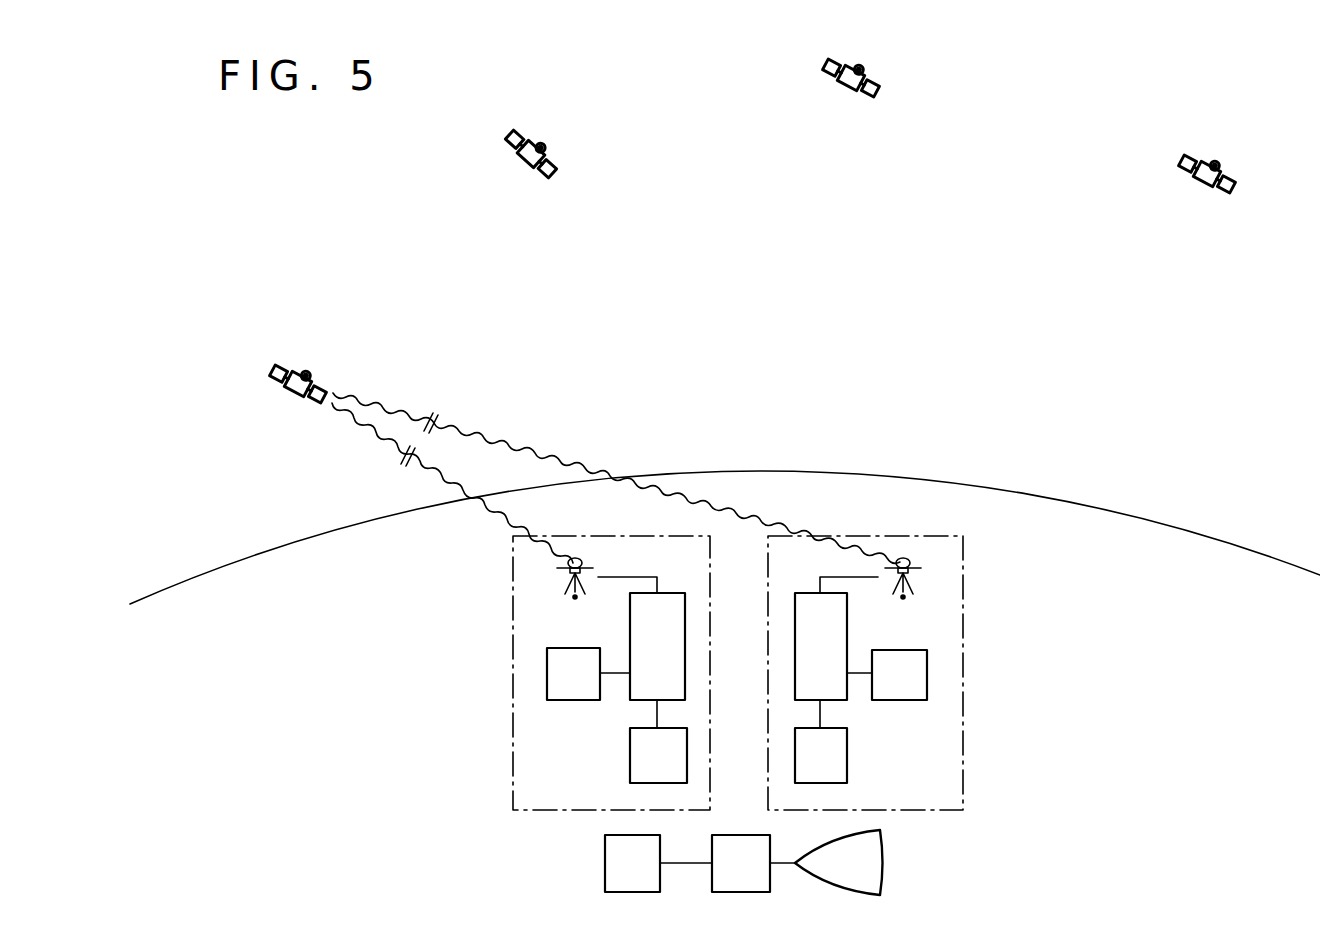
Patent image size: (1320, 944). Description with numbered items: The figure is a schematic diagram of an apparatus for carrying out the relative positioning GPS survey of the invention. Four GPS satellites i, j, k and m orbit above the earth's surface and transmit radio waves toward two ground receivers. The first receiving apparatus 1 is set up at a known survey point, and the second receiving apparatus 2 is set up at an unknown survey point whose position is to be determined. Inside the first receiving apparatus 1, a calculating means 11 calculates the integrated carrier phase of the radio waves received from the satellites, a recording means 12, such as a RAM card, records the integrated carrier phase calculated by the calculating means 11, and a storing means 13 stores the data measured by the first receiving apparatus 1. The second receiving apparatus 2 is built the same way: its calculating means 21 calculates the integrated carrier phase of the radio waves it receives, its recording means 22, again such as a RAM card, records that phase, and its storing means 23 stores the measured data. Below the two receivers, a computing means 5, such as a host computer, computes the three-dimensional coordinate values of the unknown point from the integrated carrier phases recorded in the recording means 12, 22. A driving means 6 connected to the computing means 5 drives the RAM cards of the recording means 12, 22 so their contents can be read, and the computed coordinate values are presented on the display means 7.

The first receiving apparatus 1 is at (513, 574).
The second receiving apparatus 2 is at (955, 590).
The computing means 5 is at (735, 850).
The driving means 6 is at (612, 855).
The display means 7 is at (885, 852).
The calculating means 11 is at (668, 600).
The recording means 12 is at (567, 700).
The storing means 13 is at (643, 758).
The calculating means 21 is at (808, 598).
The recording means 22 is at (897, 698).
The storing means 23 is at (840, 763).
The GPS satellite i is at (312, 377).
The GPS satellite j is at (552, 160).
The GPS satellite k is at (866, 79).
The GPS satellite m is at (1235, 180).